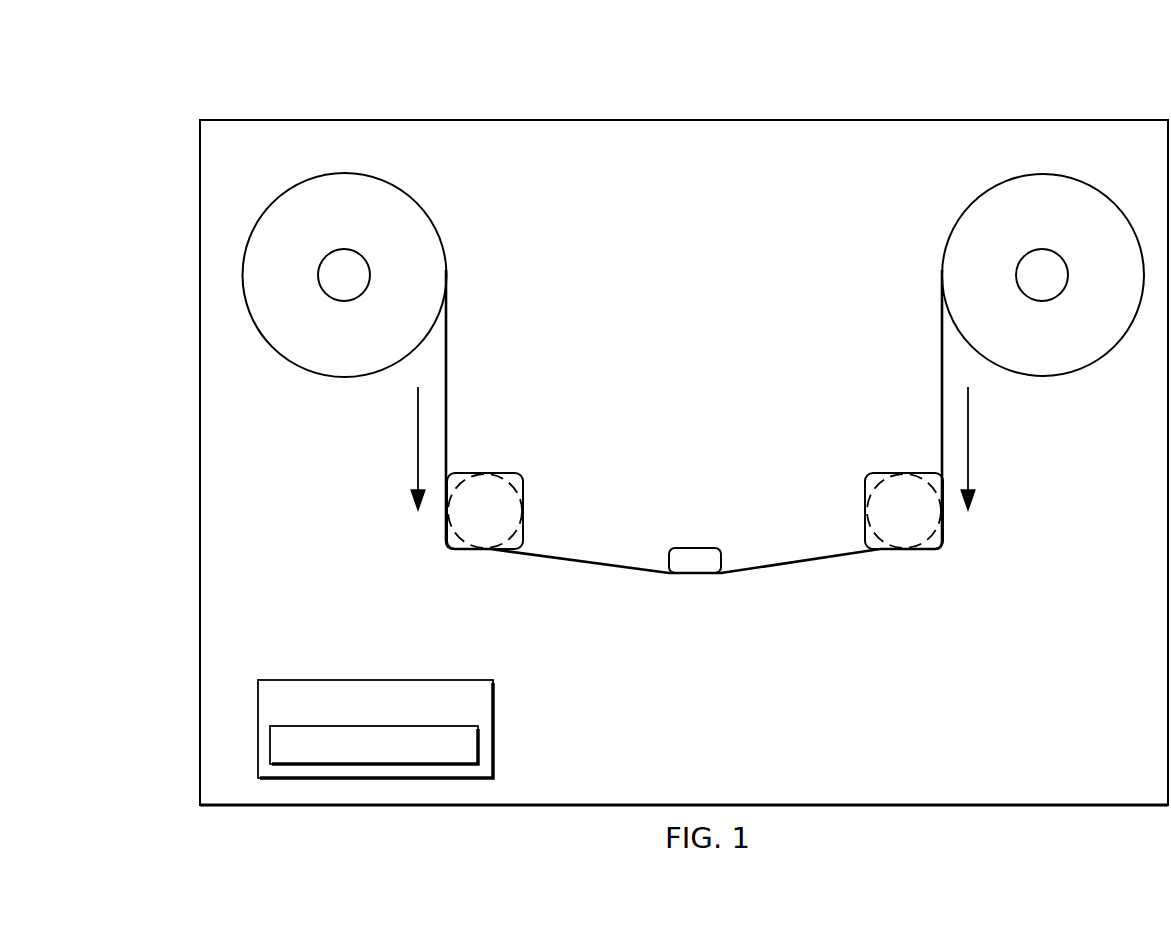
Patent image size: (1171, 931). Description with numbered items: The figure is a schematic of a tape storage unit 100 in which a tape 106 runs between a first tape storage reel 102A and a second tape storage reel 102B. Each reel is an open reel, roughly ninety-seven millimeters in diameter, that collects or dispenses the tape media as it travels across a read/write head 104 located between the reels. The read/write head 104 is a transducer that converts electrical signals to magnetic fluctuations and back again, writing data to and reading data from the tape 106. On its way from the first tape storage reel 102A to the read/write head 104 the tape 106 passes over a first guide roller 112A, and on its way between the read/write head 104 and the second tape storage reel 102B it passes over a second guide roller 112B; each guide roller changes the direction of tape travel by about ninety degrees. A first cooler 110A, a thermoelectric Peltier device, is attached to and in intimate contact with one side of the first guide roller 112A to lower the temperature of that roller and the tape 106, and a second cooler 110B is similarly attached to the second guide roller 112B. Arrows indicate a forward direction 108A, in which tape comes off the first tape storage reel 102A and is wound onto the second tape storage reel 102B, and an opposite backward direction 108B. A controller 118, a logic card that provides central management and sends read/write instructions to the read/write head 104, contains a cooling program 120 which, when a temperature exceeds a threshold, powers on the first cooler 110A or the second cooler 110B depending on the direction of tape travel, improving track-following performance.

The tape storage unit 100 is at (232, 70).
The first tape storage reel 102A is at (424, 211).
The second tape storage reel 102B is at (966, 206).
The read/write head 104 is at (696, 548).
The tape 106 is at (447, 344).
The forward direction 108A is at (417, 460).
The backward direction 108B is at (972, 460).
The first cooler 110A is at (451, 549).
The second cooler 110B is at (940, 549).
The first guide roller 112A is at (518, 490).
The second guide roller 112B is at (874, 490).
The controller 118 is at (461, 680).
The cooling program 120 is at (480, 741).